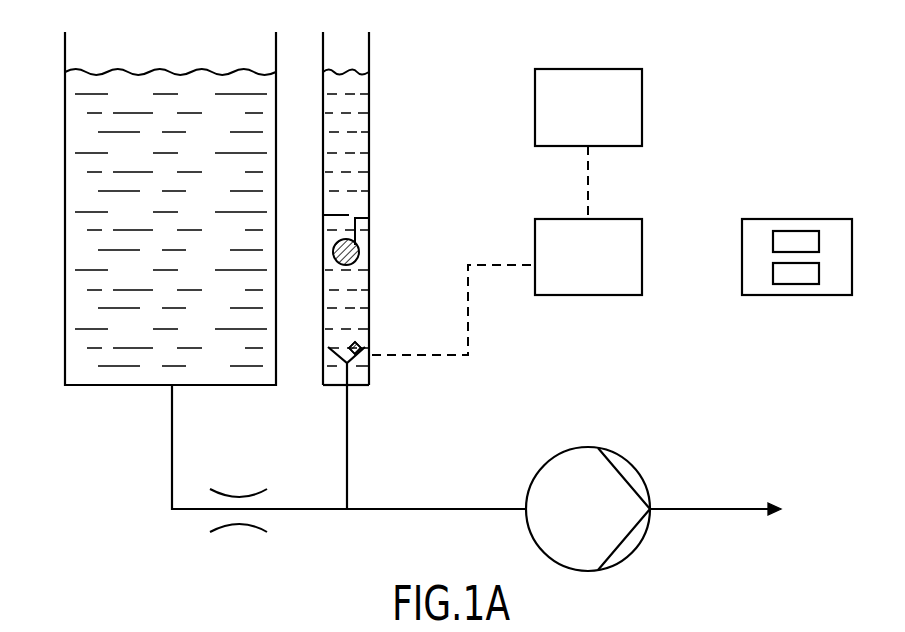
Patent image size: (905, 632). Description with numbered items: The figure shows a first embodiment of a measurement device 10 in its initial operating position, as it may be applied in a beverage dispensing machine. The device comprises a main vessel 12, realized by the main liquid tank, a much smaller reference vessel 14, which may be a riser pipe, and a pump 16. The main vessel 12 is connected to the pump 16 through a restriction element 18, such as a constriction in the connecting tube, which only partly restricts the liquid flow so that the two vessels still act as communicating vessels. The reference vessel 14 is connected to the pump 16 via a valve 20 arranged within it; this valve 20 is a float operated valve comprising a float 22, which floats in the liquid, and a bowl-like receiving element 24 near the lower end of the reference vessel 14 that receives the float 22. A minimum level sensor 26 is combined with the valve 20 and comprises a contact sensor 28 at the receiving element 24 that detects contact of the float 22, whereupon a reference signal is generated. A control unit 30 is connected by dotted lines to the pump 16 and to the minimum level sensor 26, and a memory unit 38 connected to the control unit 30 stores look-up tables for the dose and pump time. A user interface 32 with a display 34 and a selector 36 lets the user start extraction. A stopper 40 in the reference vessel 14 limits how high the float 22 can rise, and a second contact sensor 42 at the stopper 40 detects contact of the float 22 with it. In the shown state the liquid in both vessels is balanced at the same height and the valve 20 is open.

The measurement device 10 is at (768, 115).
The main vessel 12 is at (80, 385).
The reference vessel 14 is at (369, 145).
The pump 16 is at (550, 460).
The restriction element 18 is at (240, 524).
The valve 20 is at (360, 372).
The float 22 is at (358, 258).
The receiving element 24 is at (330, 372).
The minimum level sensor 26 is at (355, 350).
The contact sensor 28 is at (355, 348).
The control unit 30 is at (622, 230).
The user interface 32 is at (765, 228).
The display 34 is at (793, 243).
The selector 36 is at (793, 275).
The memory unit 38 is at (600, 80).
The stopper 40 is at (340, 214).
The second contact sensor 42 is at (369, 230).